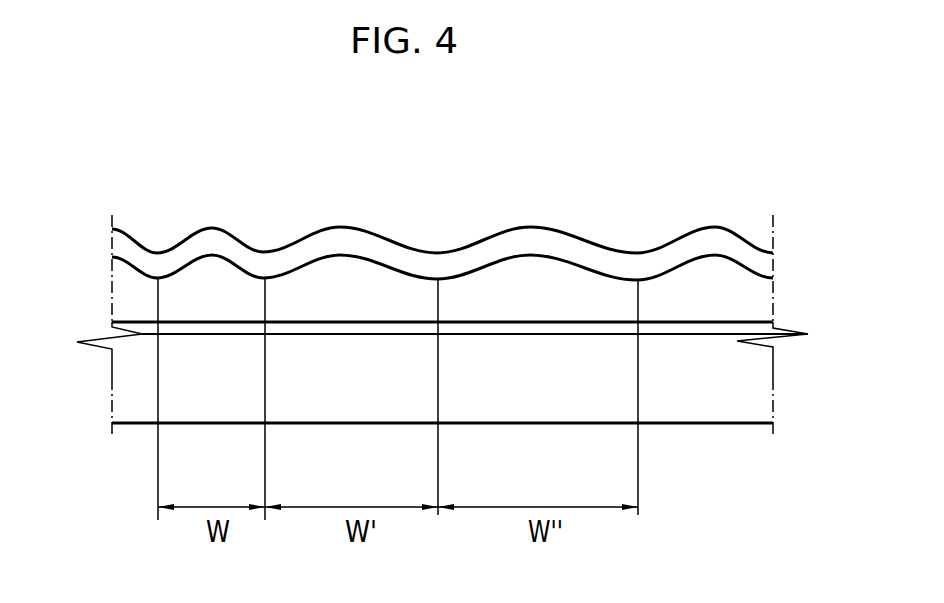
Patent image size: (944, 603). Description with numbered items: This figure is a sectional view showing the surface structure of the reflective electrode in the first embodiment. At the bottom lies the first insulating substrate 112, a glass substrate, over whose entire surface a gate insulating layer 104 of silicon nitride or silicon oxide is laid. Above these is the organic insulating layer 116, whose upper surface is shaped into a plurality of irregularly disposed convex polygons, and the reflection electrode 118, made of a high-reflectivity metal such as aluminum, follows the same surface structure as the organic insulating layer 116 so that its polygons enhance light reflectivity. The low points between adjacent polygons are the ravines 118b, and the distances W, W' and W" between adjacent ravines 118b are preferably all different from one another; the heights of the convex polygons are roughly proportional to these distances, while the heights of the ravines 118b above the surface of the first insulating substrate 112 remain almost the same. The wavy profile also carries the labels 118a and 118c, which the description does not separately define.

The gate insulating layer 104 is at (508, 331).
The first insulating substrate 112 is at (345, 382).
The organic insulating layer 116 is at (517, 283).
The reflection electrode 118 is at (423, 196).
The first pattern portion 118a is at (112, 230).
The ravines 118b is at (160, 250).
The third pattern portion 118c is at (218, 228).